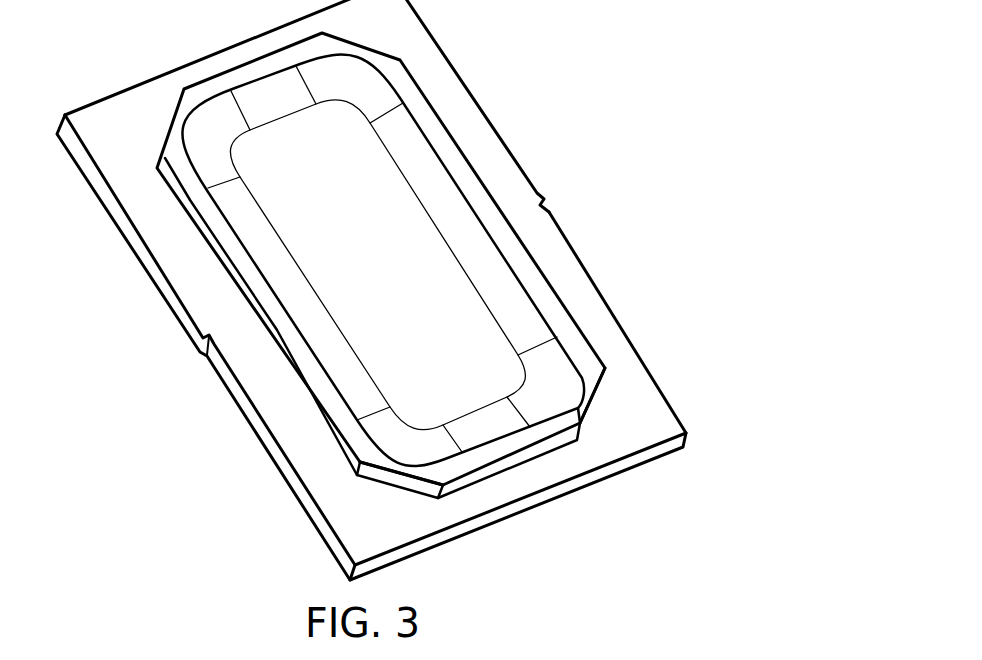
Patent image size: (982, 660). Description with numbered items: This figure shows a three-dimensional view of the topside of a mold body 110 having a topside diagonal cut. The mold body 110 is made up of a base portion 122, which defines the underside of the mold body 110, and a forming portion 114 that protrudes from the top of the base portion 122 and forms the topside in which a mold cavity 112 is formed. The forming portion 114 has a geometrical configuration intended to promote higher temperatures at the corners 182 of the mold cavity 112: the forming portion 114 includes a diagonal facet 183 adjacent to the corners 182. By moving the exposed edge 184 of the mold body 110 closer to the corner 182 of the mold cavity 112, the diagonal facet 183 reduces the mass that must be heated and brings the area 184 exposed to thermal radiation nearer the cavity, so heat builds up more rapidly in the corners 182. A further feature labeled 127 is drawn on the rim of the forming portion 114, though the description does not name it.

The mold body 110 is at (630, 340).
The mold cavity 112 is at (293, 134).
The forming portion 114 is at (420, 107).
The base portion 122 is at (511, 180).
The rim crest 127 is at (540, 302).
The corners 182 is at (581, 416).
The diagonal facet 183 is at (597, 383).
The exposed edge 184 is at (378, 471).